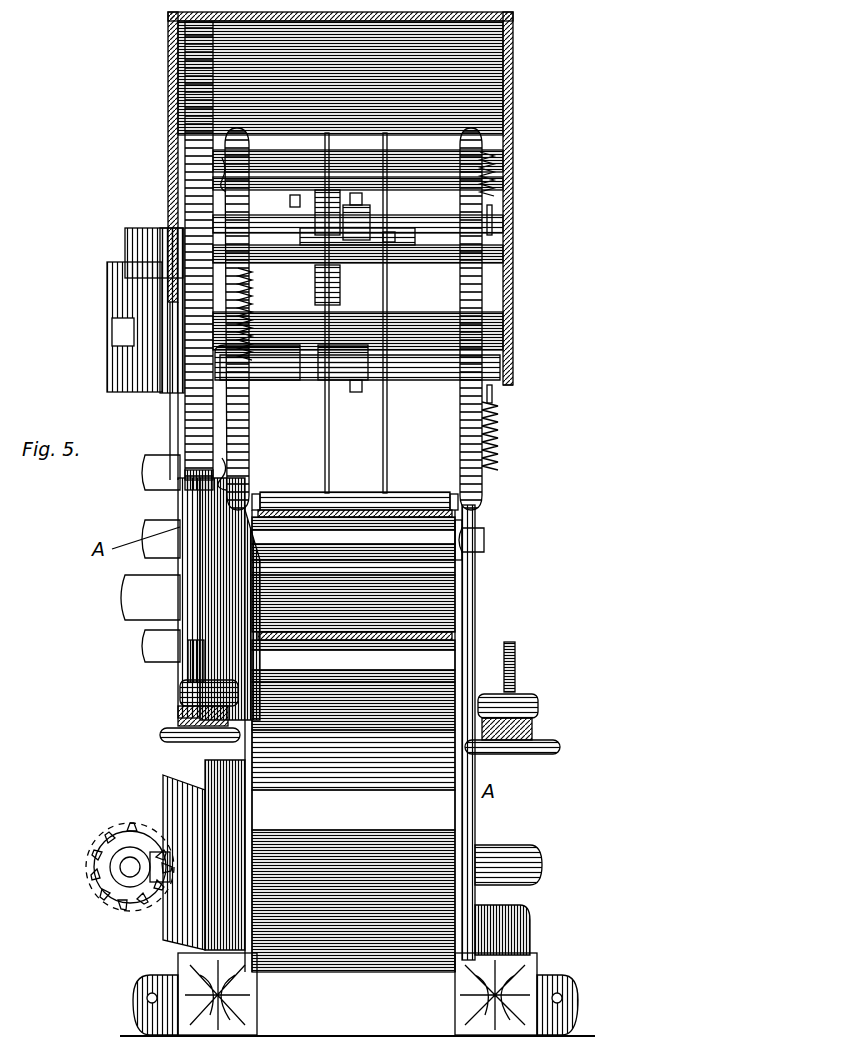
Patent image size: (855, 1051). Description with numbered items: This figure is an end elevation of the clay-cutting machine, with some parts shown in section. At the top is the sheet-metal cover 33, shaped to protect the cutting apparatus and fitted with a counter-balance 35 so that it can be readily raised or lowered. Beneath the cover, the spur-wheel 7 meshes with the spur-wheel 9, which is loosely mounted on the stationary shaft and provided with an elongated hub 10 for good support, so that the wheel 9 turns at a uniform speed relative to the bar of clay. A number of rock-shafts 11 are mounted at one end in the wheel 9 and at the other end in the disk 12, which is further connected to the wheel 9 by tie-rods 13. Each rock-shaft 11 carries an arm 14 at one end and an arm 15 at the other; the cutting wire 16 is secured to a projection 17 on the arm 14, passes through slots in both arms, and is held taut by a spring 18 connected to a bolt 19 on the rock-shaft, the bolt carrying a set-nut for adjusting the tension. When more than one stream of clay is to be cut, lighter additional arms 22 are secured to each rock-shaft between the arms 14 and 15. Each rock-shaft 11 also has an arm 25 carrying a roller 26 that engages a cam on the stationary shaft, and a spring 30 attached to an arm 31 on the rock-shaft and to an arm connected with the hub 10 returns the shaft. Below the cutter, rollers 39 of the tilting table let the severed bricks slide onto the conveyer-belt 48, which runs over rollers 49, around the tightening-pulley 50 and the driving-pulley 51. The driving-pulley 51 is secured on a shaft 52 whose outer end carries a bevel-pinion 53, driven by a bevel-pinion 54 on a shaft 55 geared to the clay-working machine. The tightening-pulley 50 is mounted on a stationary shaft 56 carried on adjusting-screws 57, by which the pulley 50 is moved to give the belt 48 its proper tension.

The spur-wheel 7 is at (188, 406).
The spur-wheel 9 is at (197, 122).
The elongated hub 10 is at (255, 225).
The rock-shaft 11 is at (433, 248).
The disk 12 is at (513, 292).
The tie-rod 13 is at (432, 165).
The arm 14 is at (250, 146).
The arm 15 is at (500, 210).
The wire 16 is at (415, 150).
The projection 17 is at (230, 170).
The spring 18 is at (498, 162).
The bolt 19 is at (505, 232).
The additional arm 22 is at (329, 137).
The arm 25 is at (342, 280).
The roller 26 is at (325, 378).
The spring 30 is at (250, 308).
The arm 31 is at (250, 372).
The cover 33 is at (513, 40).
The counter-balance 35 is at (120, 355).
The roller 39 is at (342, 498).
The conveyer-belt 48 is at (455, 508).
The roller 49 is at (462, 540).
The tightening-pulley 50 is at (435, 655).
The driving-pulley 51 is at (465, 828).
The shaft 52 is at (530, 868).
The bevel-pinion 53 is at (172, 930).
The bevel-pinion 54 is at (118, 908).
The shaft 55 is at (125, 862).
The stationary shaft 56 is at (195, 706).
The adjusting-screw 57 is at (188, 672).